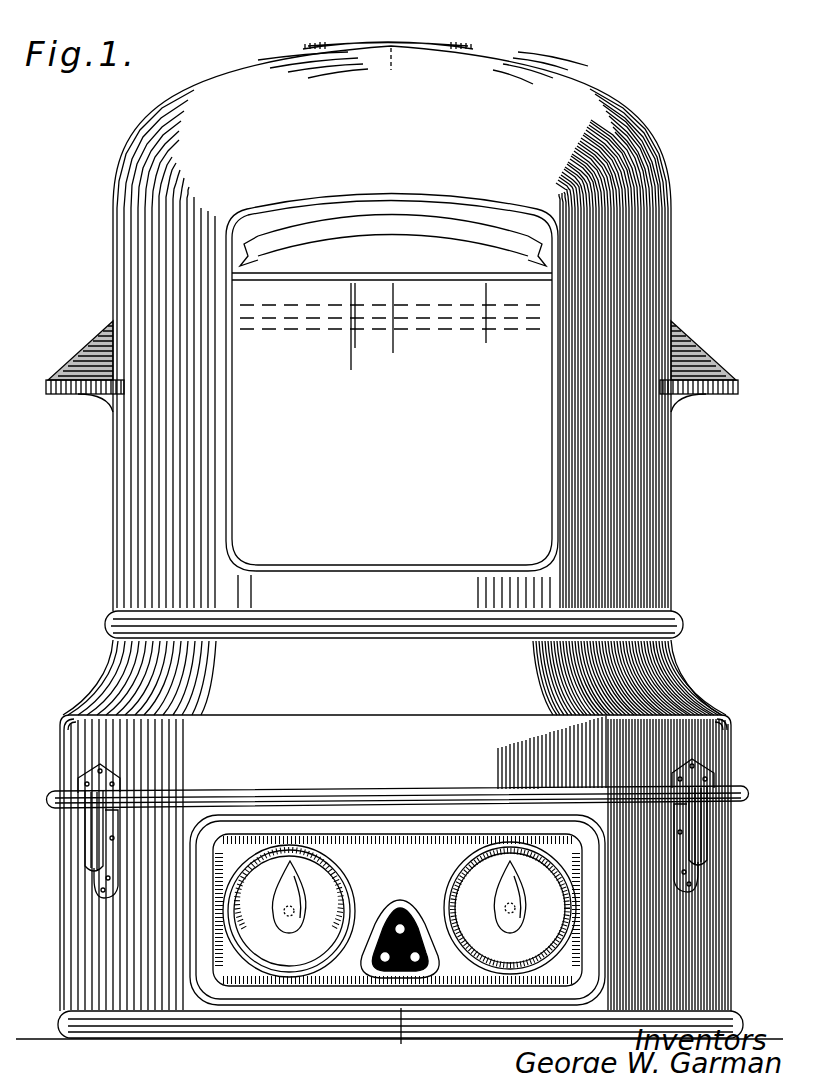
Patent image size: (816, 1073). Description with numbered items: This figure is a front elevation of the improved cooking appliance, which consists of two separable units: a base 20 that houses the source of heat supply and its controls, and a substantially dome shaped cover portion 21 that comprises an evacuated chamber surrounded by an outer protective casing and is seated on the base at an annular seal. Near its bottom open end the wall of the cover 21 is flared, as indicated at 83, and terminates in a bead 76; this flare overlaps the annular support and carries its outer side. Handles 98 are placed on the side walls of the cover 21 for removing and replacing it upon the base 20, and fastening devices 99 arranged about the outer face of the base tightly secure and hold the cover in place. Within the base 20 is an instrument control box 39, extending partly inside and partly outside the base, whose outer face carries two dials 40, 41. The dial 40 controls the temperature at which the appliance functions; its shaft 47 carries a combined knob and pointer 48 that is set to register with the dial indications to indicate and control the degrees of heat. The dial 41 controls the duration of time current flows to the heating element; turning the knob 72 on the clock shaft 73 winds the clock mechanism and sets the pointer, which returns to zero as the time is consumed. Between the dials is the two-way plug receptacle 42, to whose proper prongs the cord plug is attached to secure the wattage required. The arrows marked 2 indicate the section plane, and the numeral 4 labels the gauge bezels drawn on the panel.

The section line 2 is at (420, 11).
The cover portion 21 is at (104, 498).
The handles 98 is at (72, 388).
The flare 83 is at (722, 708).
The bead 76 is at (740, 785).
The fastening devices 99 is at (78, 816).
The base 20 is at (724, 913).
The instrument control box 39 is at (248, 968).
The gauge bezel 4 is at (215, 899).
The dial 40 is at (262, 925).
The shaft 47 is at (270, 906).
The combined knob and pointer 48 is at (296, 876).
The receptacle 42 is at (400, 903).
The dial 41 is at (466, 876).
The knob 72 is at (508, 872).
The clock shaft 73 is at (483, 955).